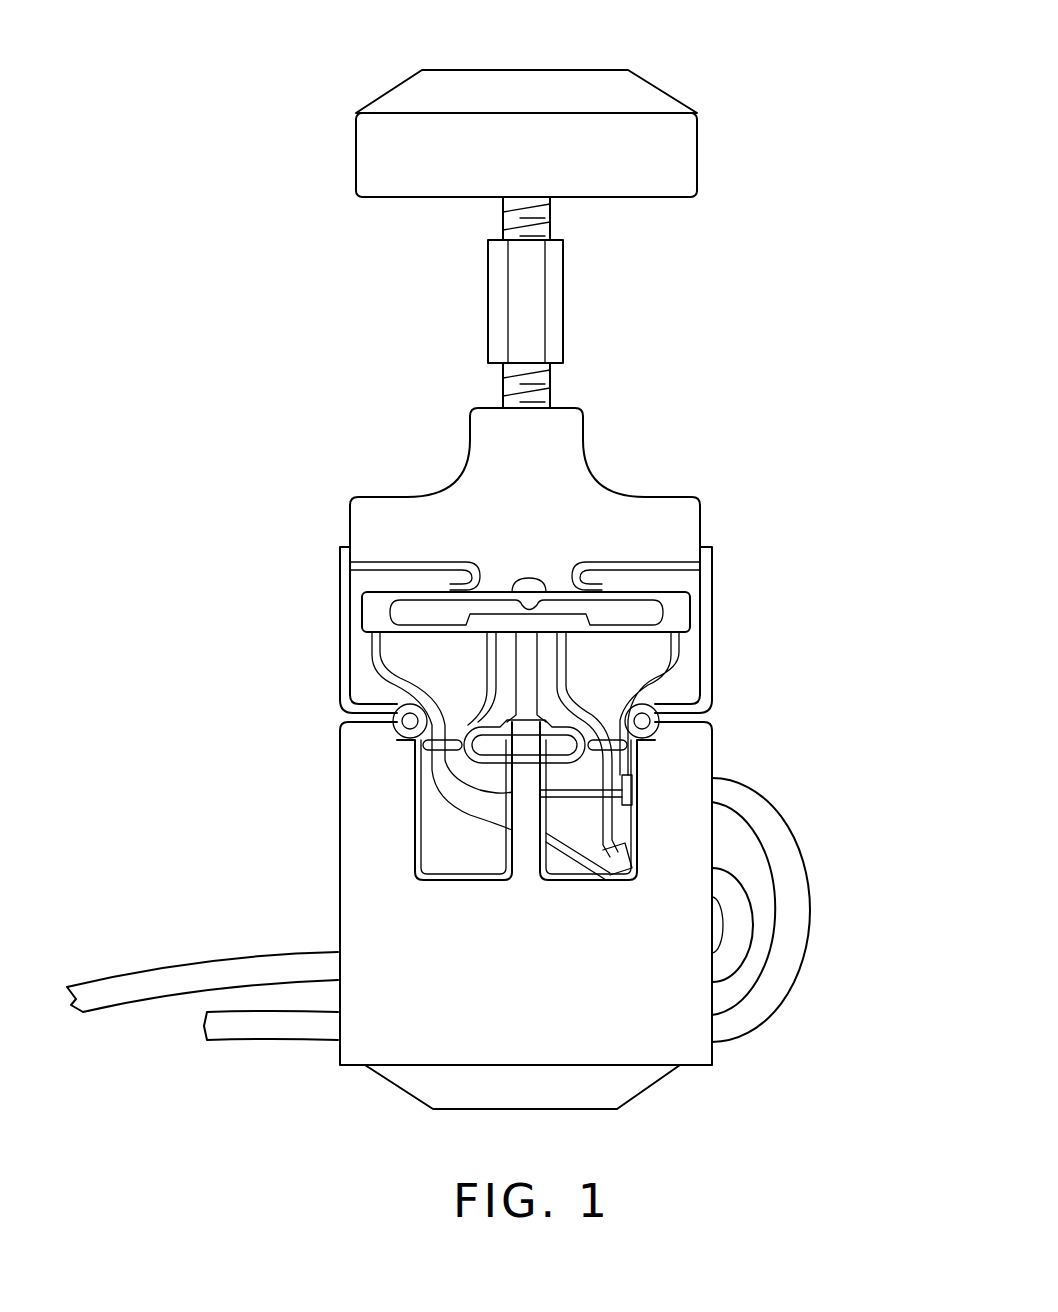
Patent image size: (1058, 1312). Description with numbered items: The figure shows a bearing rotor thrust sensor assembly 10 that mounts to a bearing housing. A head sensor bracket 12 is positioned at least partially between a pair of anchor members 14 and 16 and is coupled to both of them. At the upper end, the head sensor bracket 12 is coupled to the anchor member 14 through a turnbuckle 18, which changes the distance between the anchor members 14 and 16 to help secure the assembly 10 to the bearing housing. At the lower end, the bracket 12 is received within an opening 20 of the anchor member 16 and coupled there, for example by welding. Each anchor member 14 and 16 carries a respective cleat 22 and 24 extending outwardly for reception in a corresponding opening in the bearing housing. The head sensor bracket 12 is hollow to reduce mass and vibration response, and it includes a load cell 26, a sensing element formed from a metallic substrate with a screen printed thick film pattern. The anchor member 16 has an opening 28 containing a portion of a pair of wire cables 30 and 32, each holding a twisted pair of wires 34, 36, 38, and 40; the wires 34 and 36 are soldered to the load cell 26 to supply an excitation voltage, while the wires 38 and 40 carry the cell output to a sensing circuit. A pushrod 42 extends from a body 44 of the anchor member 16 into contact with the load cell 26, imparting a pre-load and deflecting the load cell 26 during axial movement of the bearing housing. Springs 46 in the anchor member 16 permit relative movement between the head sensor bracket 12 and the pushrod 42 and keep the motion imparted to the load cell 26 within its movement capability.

The bearing rotor thrust sensor assembly 10 is at (284, 58).
The head sensor bracket 12 is at (652, 486).
The anchor member 14 is at (707, 150).
The anchor member 16 is at (330, 834).
The turnbuckle 18 is at (575, 300).
The opening 20 is at (357, 548).
The cleat 22 is at (575, 70).
The cleat 24 is at (575, 1110).
The load cell 26 is at (617, 646).
The opening 28 is at (337, 966).
The wire cable 30 is at (258, 1040).
The wire cable 32 is at (183, 957).
The wire 34 is at (680, 660).
The wire 36 is at (375, 662).
The wire 38 is at (560, 660).
The wire 40 is at (485, 675).
The pushrod 42 is at (505, 656).
The body 44 is at (712, 1050).
The springs 46 is at (330, 711).